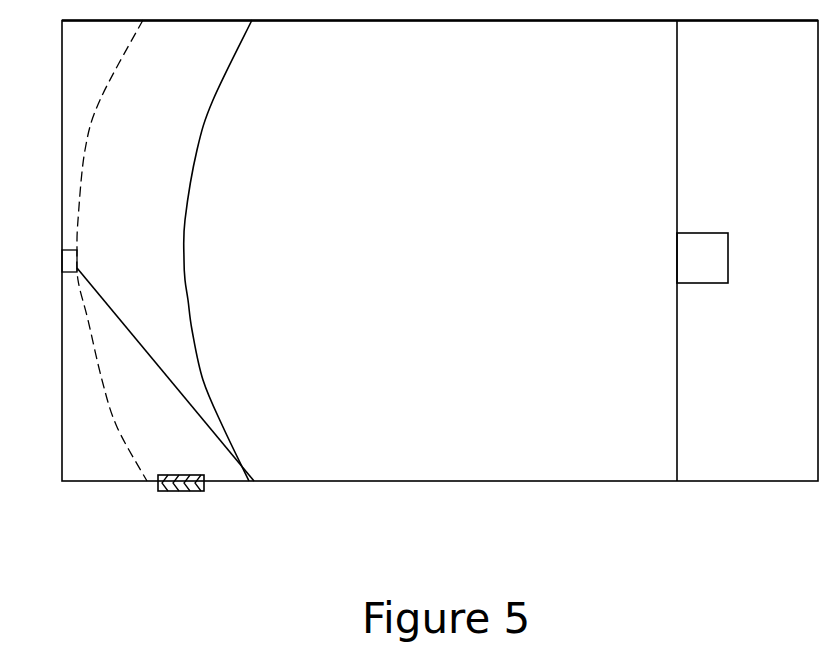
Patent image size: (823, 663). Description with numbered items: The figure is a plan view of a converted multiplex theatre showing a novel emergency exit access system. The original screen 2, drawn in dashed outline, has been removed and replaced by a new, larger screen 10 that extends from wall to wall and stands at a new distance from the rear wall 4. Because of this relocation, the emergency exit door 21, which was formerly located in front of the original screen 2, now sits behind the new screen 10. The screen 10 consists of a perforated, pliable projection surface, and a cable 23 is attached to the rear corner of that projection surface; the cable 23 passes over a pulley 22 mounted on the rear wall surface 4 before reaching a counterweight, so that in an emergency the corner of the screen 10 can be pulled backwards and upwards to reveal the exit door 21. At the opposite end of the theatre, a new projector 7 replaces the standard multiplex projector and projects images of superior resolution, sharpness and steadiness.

The rear wall 4 is at (62, 115).
The original screen 2 is at (100, 101).
The new screen 10 is at (196, 143).
The pulley 22 is at (62, 258).
The cable 23 is at (133, 332).
The emergency exit door 21 is at (190, 491).
The projector 7 is at (728, 248).